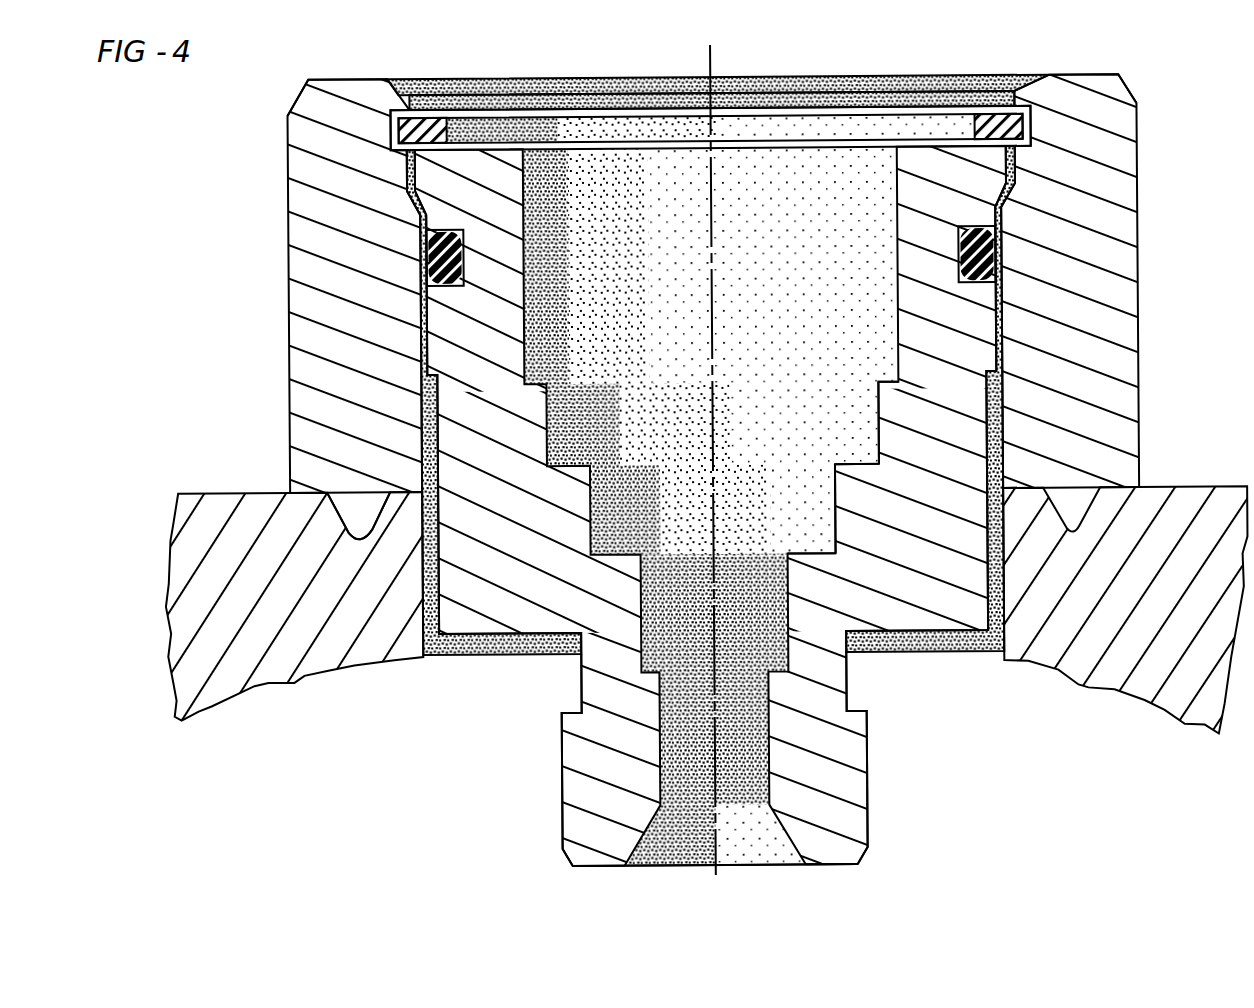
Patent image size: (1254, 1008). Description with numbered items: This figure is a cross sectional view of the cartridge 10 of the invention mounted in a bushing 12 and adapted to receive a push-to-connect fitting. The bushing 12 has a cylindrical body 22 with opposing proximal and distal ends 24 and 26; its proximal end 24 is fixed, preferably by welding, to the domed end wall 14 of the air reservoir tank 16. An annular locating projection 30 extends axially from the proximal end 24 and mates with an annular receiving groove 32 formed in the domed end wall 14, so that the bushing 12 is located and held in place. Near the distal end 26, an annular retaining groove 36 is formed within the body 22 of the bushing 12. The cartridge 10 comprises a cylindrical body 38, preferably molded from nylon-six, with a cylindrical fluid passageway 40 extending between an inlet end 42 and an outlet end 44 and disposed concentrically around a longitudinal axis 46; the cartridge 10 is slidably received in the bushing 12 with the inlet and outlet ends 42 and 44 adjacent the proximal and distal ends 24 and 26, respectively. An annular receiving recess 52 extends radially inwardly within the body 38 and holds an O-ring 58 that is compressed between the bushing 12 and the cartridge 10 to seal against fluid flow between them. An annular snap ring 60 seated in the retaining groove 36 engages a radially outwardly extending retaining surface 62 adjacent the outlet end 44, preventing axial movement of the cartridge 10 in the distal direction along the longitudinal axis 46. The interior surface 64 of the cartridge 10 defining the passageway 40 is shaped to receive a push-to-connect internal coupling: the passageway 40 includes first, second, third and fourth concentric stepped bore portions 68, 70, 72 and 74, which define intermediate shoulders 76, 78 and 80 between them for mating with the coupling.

The cartridge 10 is at (575, 684).
The bushing 12 is at (290, 362).
The domed end wall 14 is at (225, 508).
The air reservoir tank 16 is at (1190, 500).
The cylindrical body 22 is at (1091, 362).
The proximal end 24 is at (287, 488).
The distal end 26 is at (312, 77).
The locating projection 30 is at (342, 527).
The receiving groove 32 is at (376, 525).
The retaining groove 36 is at (1052, 102).
The cylindrical body 38 is at (866, 790).
The fluid passageway 40 is at (748, 163).
The inlet end 42 is at (582, 867).
The outlet end 44 is at (578, 150).
The longitudinal axis 46 is at (720, 252).
The receiving recess 52 is at (998, 237).
The O-ring 58 is at (1002, 258).
The snap ring 60 is at (990, 120).
The retaining surface 62 is at (483, 128).
The interior surface 64 is at (830, 308).
The first stepped bore portion 68 is at (898, 325).
The second stepped bore portion 70 is at (870, 430).
The third stepped bore portion 72 is at (828, 516).
The fourth stepped bore portion 74 is at (792, 662).
The intermediate shoulder 76 is at (886, 376).
The intermediate shoulder 78 is at (860, 462).
The intermediate shoulder 80 is at (810, 552).